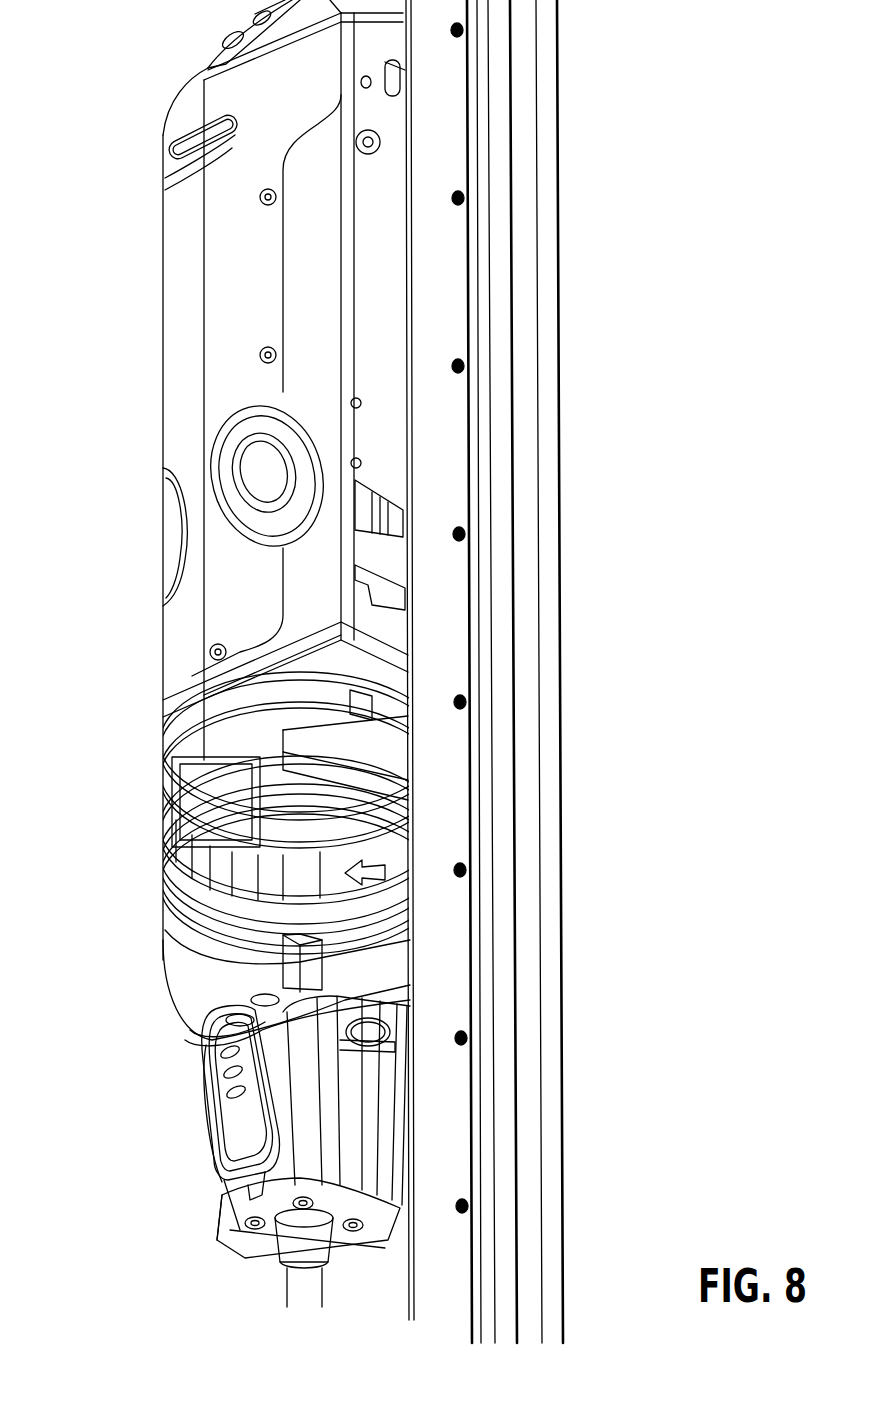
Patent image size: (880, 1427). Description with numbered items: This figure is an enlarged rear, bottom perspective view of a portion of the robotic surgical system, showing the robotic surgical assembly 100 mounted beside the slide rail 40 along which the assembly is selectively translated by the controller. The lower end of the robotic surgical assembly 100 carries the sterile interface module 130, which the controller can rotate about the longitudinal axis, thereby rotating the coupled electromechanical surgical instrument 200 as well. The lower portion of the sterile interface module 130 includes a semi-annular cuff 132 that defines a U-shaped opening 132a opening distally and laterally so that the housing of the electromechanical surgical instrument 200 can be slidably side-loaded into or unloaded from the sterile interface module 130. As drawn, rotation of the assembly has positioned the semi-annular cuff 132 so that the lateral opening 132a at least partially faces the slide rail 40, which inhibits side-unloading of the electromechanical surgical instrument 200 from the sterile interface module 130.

The slide rail 40 is at (565, 48).
The robotic surgical assembly 100 is at (153, 128).
The sterile interface module 130 is at (148, 968).
The semi-annular cuff 132 is at (205, 976).
The U-shaped opening 132a is at (305, 963).
The electromechanical surgical instrument 200 is at (228, 1188).